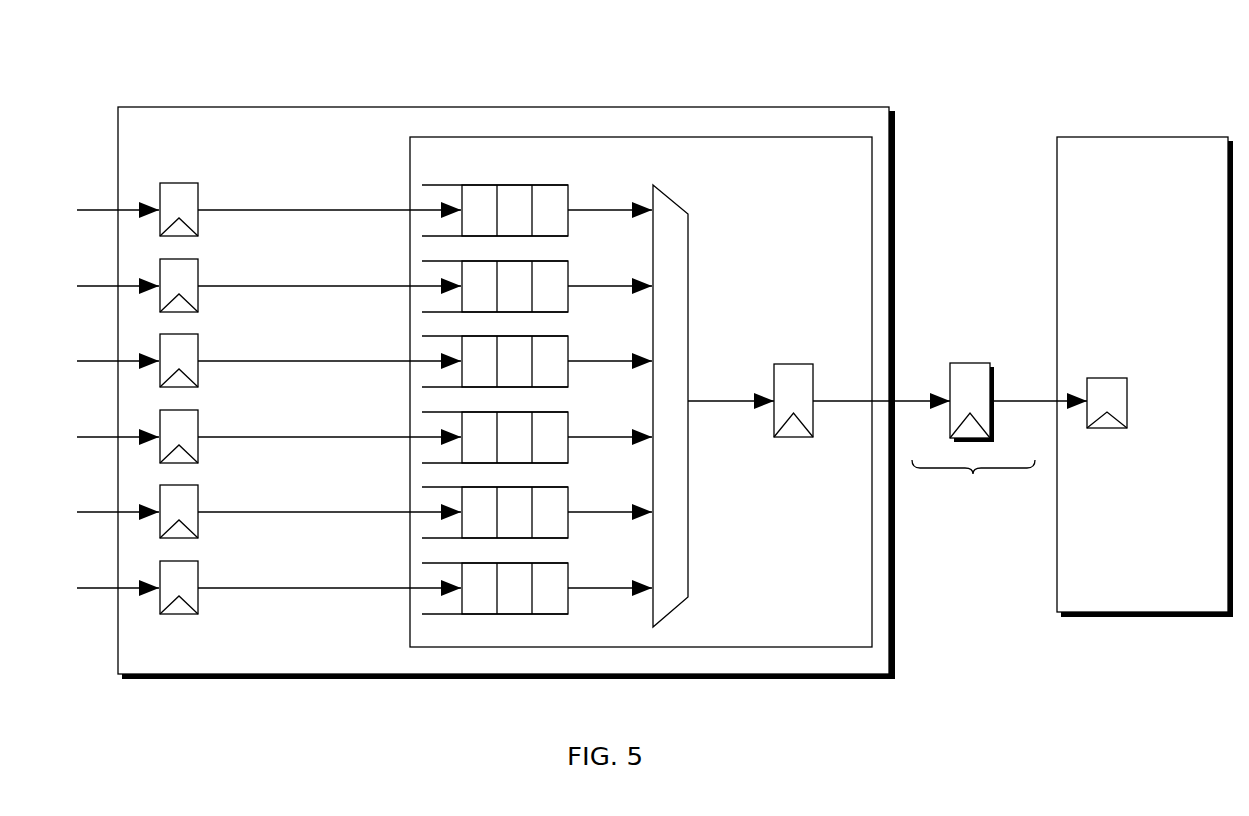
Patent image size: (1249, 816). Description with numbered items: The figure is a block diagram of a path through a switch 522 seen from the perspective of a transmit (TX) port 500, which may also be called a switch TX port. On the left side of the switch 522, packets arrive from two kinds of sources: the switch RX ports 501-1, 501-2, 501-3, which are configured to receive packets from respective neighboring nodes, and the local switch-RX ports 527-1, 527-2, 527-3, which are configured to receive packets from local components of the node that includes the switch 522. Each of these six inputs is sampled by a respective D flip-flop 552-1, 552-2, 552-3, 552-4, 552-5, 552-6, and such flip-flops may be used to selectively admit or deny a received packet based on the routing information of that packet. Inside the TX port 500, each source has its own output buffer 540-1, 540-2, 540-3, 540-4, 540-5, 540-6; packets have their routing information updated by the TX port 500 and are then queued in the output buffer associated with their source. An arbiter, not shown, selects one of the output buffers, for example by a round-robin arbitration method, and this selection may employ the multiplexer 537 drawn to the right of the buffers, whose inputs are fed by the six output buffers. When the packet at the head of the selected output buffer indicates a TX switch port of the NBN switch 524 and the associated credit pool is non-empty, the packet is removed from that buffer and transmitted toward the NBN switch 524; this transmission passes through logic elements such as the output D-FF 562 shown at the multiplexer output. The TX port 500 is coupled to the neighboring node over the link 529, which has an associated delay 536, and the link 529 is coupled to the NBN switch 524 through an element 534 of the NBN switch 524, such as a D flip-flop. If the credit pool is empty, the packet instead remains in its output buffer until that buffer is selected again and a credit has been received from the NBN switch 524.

The transmit (TX) port 500 is at (545, 137).
The switch 522 is at (835, 107).
The NBN switch 524 is at (1112, 137).
The switch RX port 501-1 is at (95, 210).
The switch RX port 501-2 is at (95, 286).
The switch RX port 501-3 is at (95, 361).
The local switch-RX port 527-1 is at (95, 437).
The local switch-RX port 527-2 is at (95, 512).
The local switch-RX port 527-3 is at (95, 588).
The D flip-flop 552-1 is at (197, 197).
The D flip-flop 552-2 is at (197, 273).
The D flip-flop 552-3 is at (197, 348).
The D flip-flop 552-4 is at (197, 424).
The D flip-flop 552-5 is at (197, 499).
The D flip-flop 552-6 is at (197, 575).
The output buffer 540-1 is at (553, 183).
The output buffer 540-2 is at (553, 259).
The output buffer 540-3 is at (553, 334).
The output buffer 540-4 is at (553, 410).
The output buffer 540-5 is at (553, 485).
The output buffer 540-6 is at (553, 561).
The multiplexer 537 is at (688, 253).
The output D-FF 562 is at (795, 364).
The delay 536 is at (972, 362).
The link 529 is at (990, 527).
The element 534 is at (1112, 378).